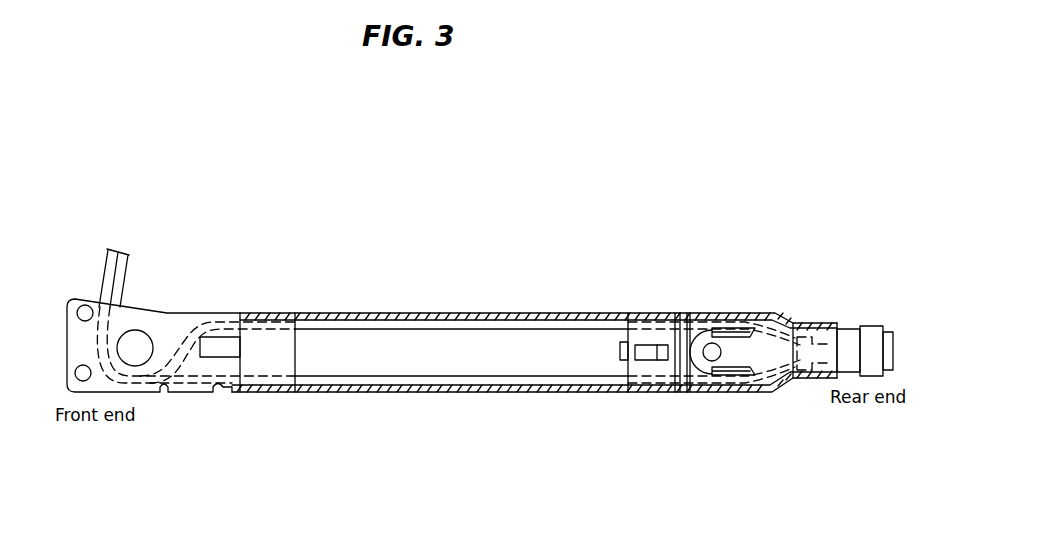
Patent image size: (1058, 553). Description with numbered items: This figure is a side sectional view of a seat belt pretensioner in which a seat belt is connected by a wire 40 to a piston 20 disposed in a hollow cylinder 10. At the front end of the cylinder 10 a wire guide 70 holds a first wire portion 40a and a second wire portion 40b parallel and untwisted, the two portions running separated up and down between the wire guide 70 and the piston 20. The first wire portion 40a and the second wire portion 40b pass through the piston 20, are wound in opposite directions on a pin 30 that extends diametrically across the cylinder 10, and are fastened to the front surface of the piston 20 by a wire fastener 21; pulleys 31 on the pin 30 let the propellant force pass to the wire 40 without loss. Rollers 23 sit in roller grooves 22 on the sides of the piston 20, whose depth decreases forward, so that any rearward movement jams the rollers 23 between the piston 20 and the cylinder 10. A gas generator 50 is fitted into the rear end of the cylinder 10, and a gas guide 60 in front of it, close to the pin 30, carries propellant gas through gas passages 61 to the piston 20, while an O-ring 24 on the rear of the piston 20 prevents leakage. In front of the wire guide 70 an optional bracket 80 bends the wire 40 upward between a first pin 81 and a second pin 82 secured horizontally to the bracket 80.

The cylinder 10 is at (470, 312).
The piston 20 is at (645, 330).
The wire fastener 21 is at (620, 360).
The roller grooves 22 is at (645, 360).
The rollers 23 is at (677, 365).
The O-ring 24 is at (682, 325).
The pin 30 is at (715, 362).
The pulleys 31 is at (705, 325).
The wire 40 is at (120, 246).
The first wire portion 40a is at (356, 328).
The second wire portion 40b is at (348, 378).
The gas generator 50 is at (850, 350).
The gas guide 60 is at (765, 355).
The gas passages 61 is at (745, 330).
The wire guide 70 is at (268, 360).
The bracket 80 is at (187, 368).
The first pin 81 is at (143, 332).
The second pin 82 is at (80, 298).